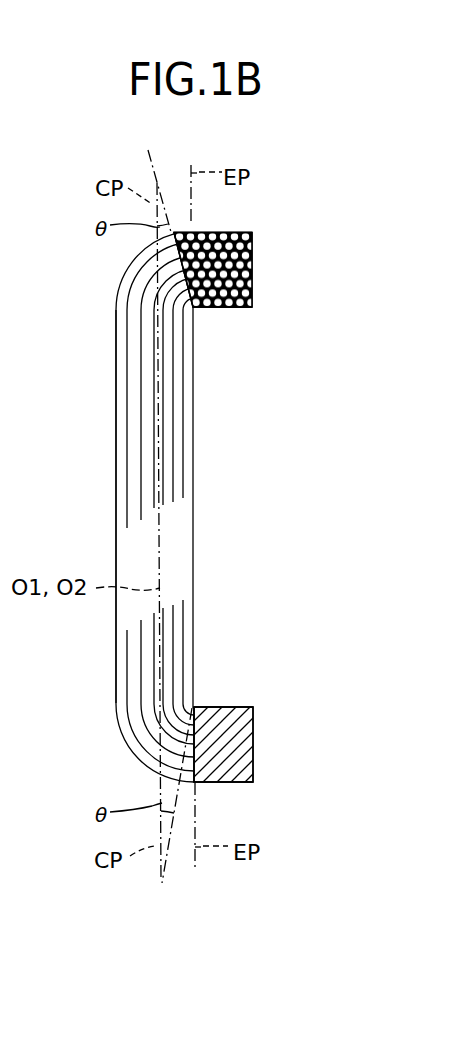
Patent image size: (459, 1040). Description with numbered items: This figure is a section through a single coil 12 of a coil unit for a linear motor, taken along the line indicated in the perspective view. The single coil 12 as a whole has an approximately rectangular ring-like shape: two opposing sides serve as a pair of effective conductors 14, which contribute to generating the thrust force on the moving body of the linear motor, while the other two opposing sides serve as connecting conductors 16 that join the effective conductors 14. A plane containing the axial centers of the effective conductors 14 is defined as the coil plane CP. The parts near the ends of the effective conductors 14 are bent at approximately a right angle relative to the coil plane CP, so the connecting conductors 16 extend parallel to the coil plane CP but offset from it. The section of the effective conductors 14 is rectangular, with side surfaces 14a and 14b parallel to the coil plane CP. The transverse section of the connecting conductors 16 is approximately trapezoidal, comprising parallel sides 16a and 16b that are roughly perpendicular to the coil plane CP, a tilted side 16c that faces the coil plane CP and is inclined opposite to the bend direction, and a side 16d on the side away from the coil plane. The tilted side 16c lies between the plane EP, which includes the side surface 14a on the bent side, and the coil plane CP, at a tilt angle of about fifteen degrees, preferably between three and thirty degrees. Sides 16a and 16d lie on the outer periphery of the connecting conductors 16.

The single coil 12 is at (276, 326).
The effective conductors 14 is at (158, 508).
The side surface 14a is at (194, 418).
The side surface 14b is at (116, 483).
The connecting conductors 16 is at (196, 501).
The parallel side 16a is at (223, 232).
The parallel side 16b is at (230, 308).
The tilted side 16c is at (189, 267).
The side opposite to the coil plane 16d is at (253, 268).